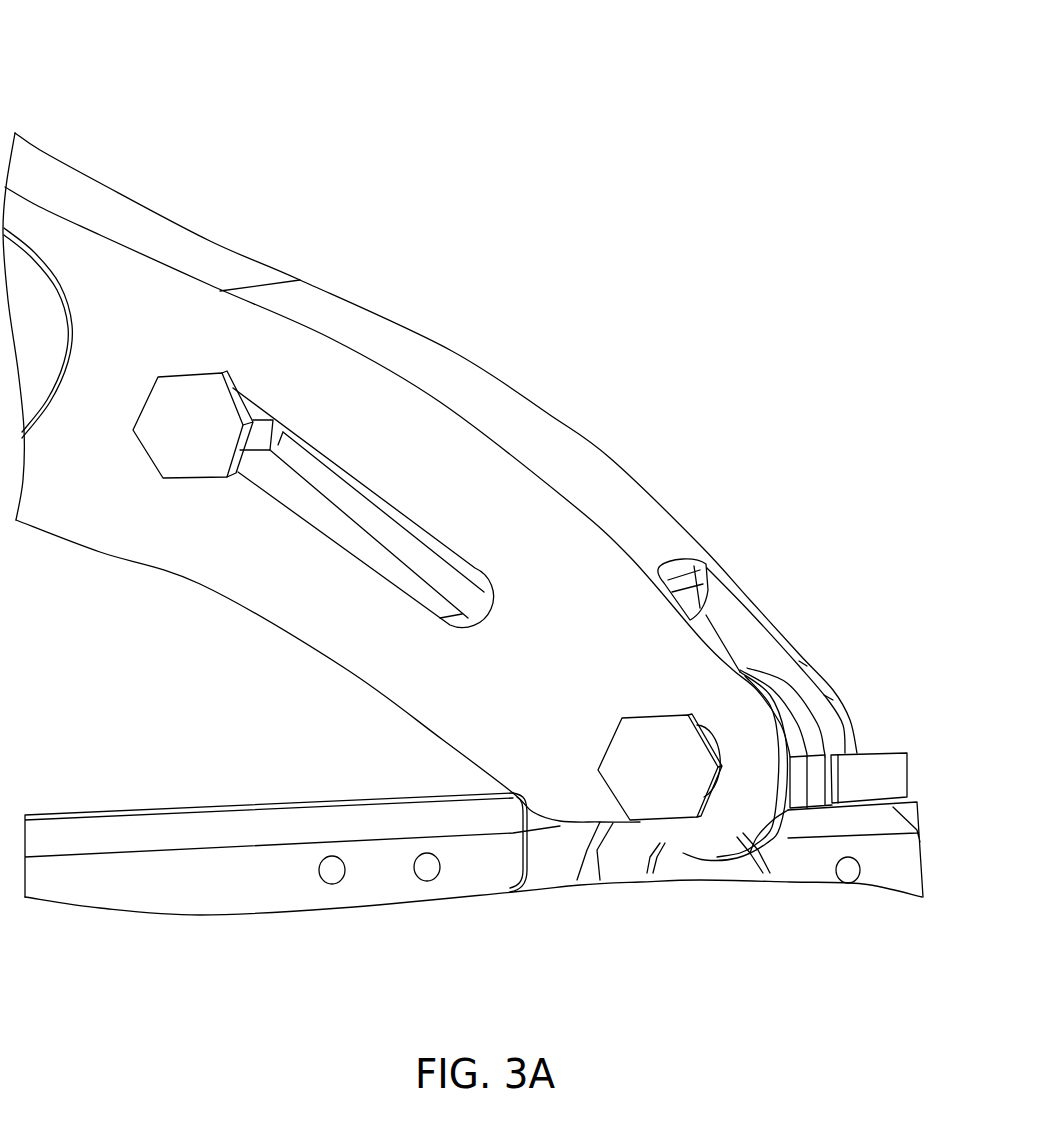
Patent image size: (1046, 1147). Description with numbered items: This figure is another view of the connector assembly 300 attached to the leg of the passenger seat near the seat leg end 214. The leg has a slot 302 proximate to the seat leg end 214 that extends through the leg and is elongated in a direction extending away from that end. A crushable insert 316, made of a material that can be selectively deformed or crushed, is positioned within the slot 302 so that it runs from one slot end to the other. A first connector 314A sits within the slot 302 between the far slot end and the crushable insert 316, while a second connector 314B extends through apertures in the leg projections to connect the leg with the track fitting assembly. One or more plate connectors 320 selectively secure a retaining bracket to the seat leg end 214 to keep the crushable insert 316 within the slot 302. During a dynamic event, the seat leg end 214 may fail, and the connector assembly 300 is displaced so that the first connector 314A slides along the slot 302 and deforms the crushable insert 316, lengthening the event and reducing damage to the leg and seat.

The connector assembly 300 is at (78, 86).
The slot 302 is at (377, 485).
The seat leg end 214 is at (683, 562).
The plate connector 320 is at (700, 603).
The first connector 314A is at (192, 457).
The second connector 314B is at (682, 822).
The crushable insert 316 is at (386, 530).